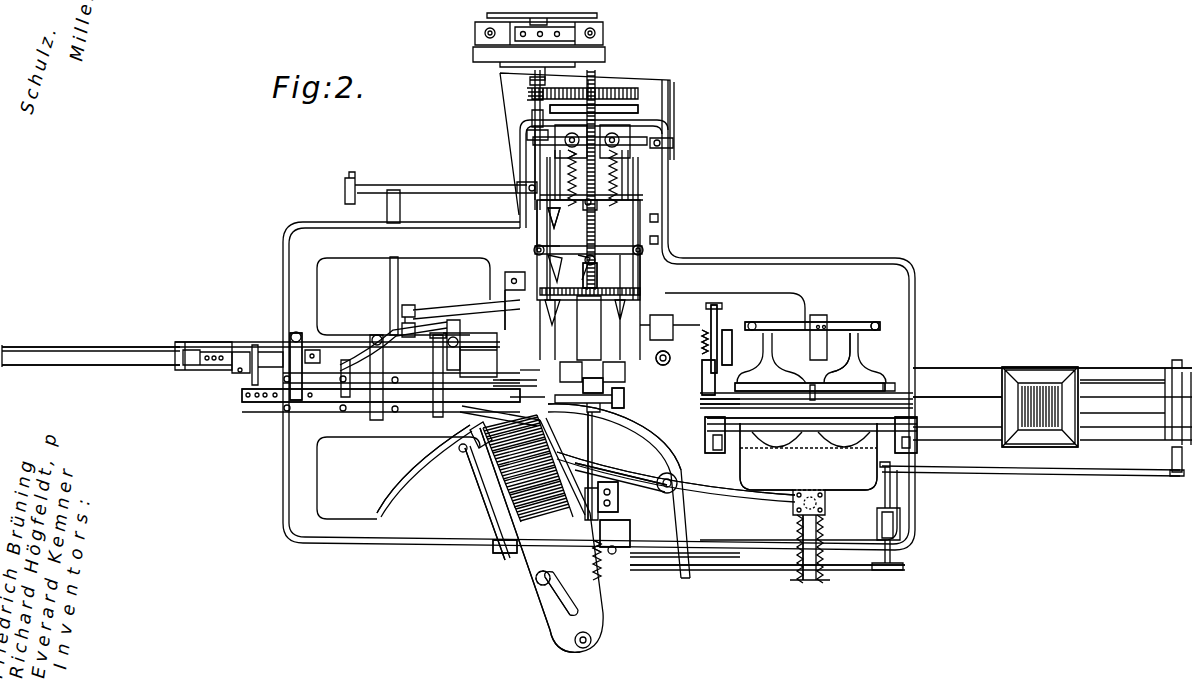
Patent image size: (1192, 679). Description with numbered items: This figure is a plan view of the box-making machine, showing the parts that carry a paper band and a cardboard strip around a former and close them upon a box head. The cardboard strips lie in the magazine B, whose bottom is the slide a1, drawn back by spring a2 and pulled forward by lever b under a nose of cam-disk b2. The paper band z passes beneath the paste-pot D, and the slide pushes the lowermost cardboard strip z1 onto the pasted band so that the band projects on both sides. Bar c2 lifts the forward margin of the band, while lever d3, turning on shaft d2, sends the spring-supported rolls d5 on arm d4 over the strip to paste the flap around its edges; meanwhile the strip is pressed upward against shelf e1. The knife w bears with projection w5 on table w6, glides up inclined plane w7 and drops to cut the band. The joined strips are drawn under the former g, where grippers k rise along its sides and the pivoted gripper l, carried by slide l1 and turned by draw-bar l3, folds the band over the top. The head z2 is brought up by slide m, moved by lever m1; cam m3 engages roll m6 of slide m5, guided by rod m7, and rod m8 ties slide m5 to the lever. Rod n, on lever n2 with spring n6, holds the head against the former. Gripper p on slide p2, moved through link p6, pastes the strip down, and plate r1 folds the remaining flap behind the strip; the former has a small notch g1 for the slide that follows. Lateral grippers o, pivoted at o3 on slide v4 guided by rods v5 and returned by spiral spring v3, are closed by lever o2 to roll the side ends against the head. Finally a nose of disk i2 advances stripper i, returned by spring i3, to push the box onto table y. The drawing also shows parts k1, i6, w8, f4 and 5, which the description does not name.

The spiral spring v3 is at (592, 95).
The bar k1 is at (641, 108).
The guide rods v5 is at (528, 162).
The spring i3 is at (591, 165).
The slide v4 is at (534, 225).
The plate r1 is at (554, 216).
The pivot o3 is at (536, 250).
The stripper i is at (590, 275).
The rod i6 is at (623, 277).
The lateral grippers o is at (645, 268).
The notch g1 is at (589, 328).
The knife w is at (722, 318).
The shaft d2 is at (748, 326).
The lever d3 is at (880, 326).
The projection w5 is at (718, 344).
The arm d4 is at (866, 350).
The block w8 is at (735, 349).
The rolls d5 is at (810, 378).
The inclined plane w7 is at (702, 382).
The table w6 is at (700, 398).
The bar c2 is at (713, 408).
The lever o2 is at (655, 368).
The shelf e1 is at (733, 432).
The cardboard strip z1 is at (812, 418).
The paper band z is at (1052, 390).
The paste-pot D is at (1040, 367).
The magazine B is at (920, 432).
The slide a1 is at (808, 456).
The lever b is at (735, 495).
The spring a2 is at (826, 540).
The table y is at (645, 422).
The grippers k is at (624, 398).
The former g is at (593, 389).
The part 5 is at (510, 371).
The gripper p is at (500, 375).
The slide p2 is at (530, 365).
The link p6 is at (527, 388).
The disk i2 is at (305, 418).
The draw-bar l3 is at (365, 402).
The rod f4 is at (112, 345).
The slide m is at (466, 470).
The gripper l is at (470, 480).
The lever m1 is at (480, 523).
The head z2 is at (490, 532).
The rod n is at (599, 466).
The cam-disk b2 is at (614, 457).
The lever n2 is at (618, 505).
The cam m3 is at (632, 540).
The rod m7 is at (500, 555).
The roll m6 is at (540, 590).
The slide l1 is at (542, 596).
The rod m8 is at (545, 618).
The spring n6 is at (605, 575).
The slide m5 is at (640, 565).